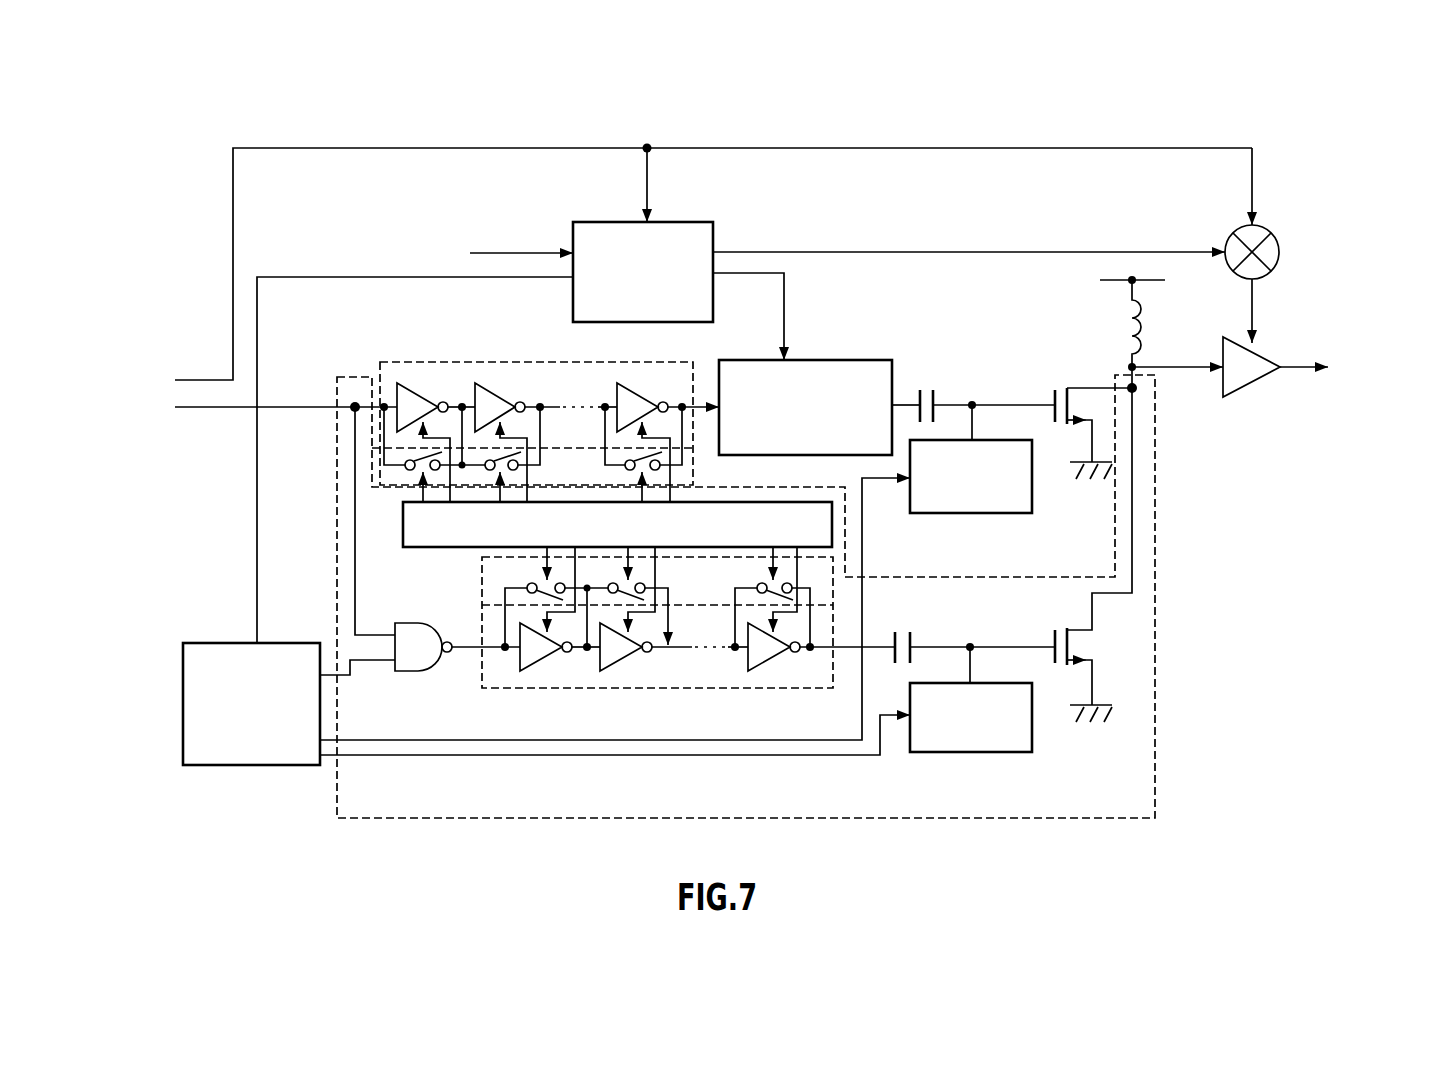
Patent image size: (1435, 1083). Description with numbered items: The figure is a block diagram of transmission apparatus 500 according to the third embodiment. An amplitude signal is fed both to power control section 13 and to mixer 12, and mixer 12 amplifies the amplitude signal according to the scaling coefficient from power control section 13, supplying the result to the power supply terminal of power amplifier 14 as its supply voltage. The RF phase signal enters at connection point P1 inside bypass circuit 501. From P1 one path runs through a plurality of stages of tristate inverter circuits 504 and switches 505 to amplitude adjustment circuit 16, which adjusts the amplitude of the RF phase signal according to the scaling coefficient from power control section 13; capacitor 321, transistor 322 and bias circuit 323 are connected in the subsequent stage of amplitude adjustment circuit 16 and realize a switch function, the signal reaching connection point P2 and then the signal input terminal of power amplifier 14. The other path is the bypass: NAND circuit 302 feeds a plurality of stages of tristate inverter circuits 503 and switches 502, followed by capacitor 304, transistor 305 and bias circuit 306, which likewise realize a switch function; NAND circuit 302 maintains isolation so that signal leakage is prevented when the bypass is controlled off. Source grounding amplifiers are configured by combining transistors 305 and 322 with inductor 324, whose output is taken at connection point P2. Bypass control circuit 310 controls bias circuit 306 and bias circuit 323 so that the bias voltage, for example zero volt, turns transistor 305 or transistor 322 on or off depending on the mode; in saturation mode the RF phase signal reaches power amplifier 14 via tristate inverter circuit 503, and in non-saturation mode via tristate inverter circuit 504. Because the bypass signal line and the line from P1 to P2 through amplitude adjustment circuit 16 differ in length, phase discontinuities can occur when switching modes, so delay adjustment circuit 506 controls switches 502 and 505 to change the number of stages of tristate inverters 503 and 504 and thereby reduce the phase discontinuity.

The transmission apparatus 500 is at (655, 77).
The power control section 13 is at (686, 222).
The mixer 12 is at (1279, 252).
The power amplifier 14 is at (1249, 386).
The amplitude adjustment circuit 16 is at (827, 360).
The bypass circuit 501 is at (1157, 676).
The tristate inverter circuits 504 is at (693, 364).
The switches 505 is at (702, 465).
The delay adjustment circuit 506 is at (450, 548).
The switches 502 is at (480, 590).
The tristate inverter circuits 503 is at (490, 691).
The NAND circuit 302 is at (413, 672).
The capacitor 304 is at (911, 632).
The transistor 305 is at (1082, 634).
The bias circuit 306 is at (987, 752).
The bypass control circuit 310 is at (248, 768).
The capacitor 321 is at (933, 390).
The transistor 322 is at (1068, 390).
The bias circuit 323 is at (987, 513).
The inductor 324 is at (1144, 314).
The connection point P1 is at (353, 406).
The connection point P2 is at (1135, 391).